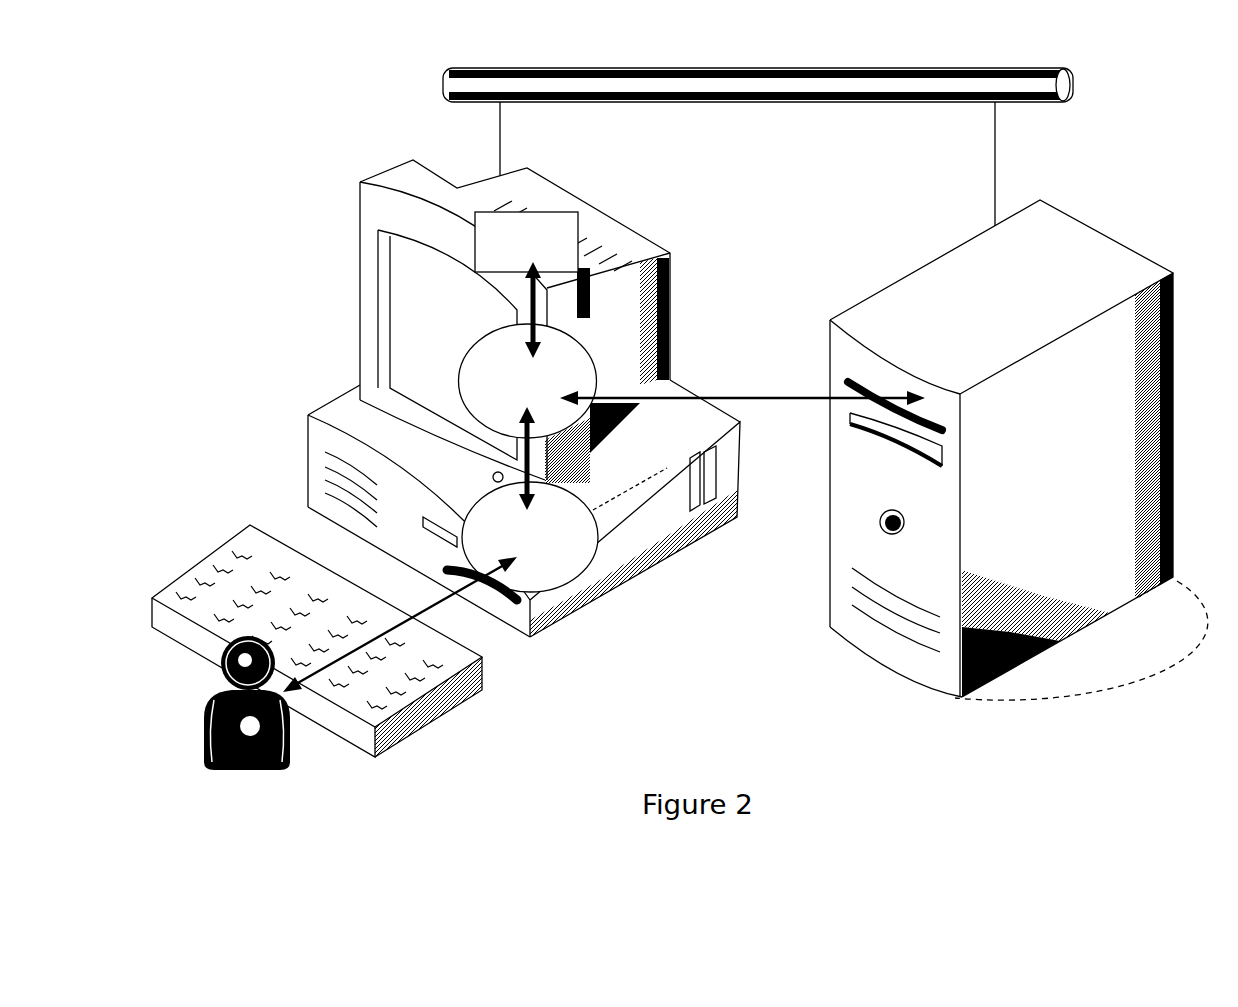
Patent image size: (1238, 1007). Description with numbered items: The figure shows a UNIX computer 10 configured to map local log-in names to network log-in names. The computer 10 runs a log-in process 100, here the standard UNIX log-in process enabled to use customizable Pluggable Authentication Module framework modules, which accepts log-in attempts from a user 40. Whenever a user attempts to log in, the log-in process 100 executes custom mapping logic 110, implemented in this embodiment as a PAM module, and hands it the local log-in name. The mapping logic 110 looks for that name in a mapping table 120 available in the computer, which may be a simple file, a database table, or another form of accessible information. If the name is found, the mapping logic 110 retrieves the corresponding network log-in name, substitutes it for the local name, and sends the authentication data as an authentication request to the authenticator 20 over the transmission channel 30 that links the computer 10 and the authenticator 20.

The UNIX computer 10 is at (388, 190).
The authenticator 20 is at (843, 607).
The transmission channel 30 is at (885, 95).
The user 40 is at (235, 728).
The log-in process 100 is at (557, 498).
The mapping logic 110 is at (568, 348).
The mapping table 120 is at (568, 225).